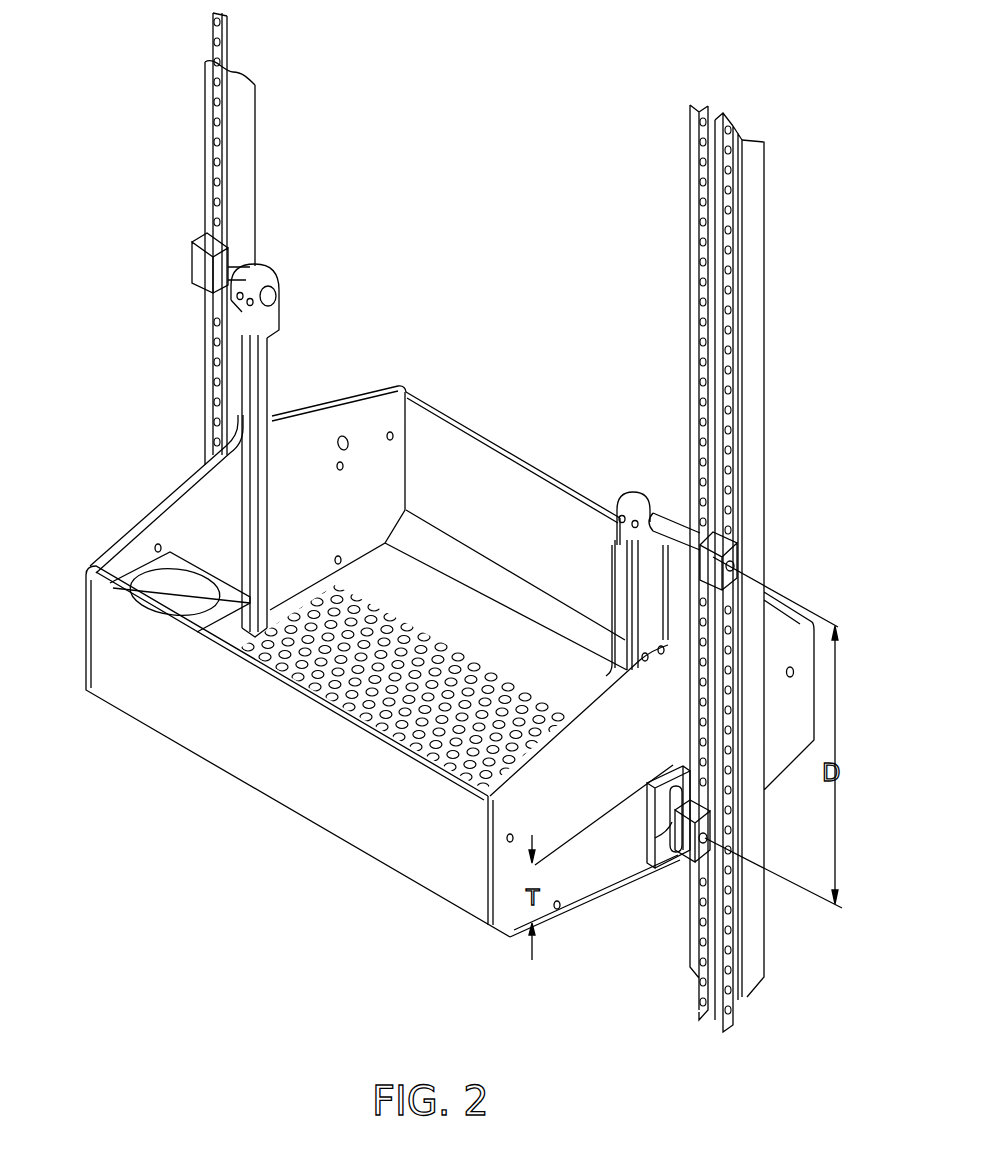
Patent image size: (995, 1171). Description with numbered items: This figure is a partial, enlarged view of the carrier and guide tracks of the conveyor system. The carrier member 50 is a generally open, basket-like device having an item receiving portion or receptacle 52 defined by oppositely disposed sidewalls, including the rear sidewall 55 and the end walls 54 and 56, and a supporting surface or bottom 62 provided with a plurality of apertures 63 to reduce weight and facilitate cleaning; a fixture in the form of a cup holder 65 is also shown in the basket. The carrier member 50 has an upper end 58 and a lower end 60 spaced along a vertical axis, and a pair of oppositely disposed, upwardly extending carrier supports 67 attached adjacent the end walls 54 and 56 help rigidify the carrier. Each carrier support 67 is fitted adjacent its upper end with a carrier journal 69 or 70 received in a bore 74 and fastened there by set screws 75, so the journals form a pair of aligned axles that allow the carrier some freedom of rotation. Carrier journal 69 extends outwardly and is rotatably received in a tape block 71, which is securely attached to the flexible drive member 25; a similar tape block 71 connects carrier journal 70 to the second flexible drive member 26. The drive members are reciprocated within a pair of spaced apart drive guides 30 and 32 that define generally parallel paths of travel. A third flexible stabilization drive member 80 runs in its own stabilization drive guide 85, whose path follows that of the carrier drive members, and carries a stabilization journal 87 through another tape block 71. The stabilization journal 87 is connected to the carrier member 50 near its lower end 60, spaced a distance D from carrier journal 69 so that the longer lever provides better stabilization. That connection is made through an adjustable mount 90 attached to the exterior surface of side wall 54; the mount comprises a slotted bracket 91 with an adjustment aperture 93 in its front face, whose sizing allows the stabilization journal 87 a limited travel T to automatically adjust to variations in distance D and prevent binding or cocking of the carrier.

The flexible drive member 25 is at (742, 1012).
The flexible drive member 26 is at (213, 32).
The drive guide 30 is at (764, 242).
The drive guide 32 is at (243, 118).
The carrier member 50 is at (440, 368).
The receptacle 52 is at (462, 450).
The end wall 54 is at (635, 745).
The sidewall 55 is at (525, 529).
The end wall 56 is at (318, 490).
The upper end 58 is at (198, 446).
The lower end 60 is at (80, 712).
The bottom 62 is at (535, 667).
The perforations 63 is at (350, 594).
The cup holder 65 is at (178, 572).
The carrier support 67 is at (262, 351).
The carrier journal 69 is at (672, 527).
The carrier journal 70 is at (238, 268).
The tape block 71 is at (192, 258).
The bore 74 is at (281, 296).
The set screw 75 is at (240, 298).
The stabilization drive member 80 is at (696, 995).
The stabilization drive guide 85 is at (690, 232).
The stabilization journal 87 is at (667, 834).
The adjustable mount 90 is at (615, 800).
The slotted bracket 91 is at (660, 792).
The adjustment aperture 93 is at (676, 788).